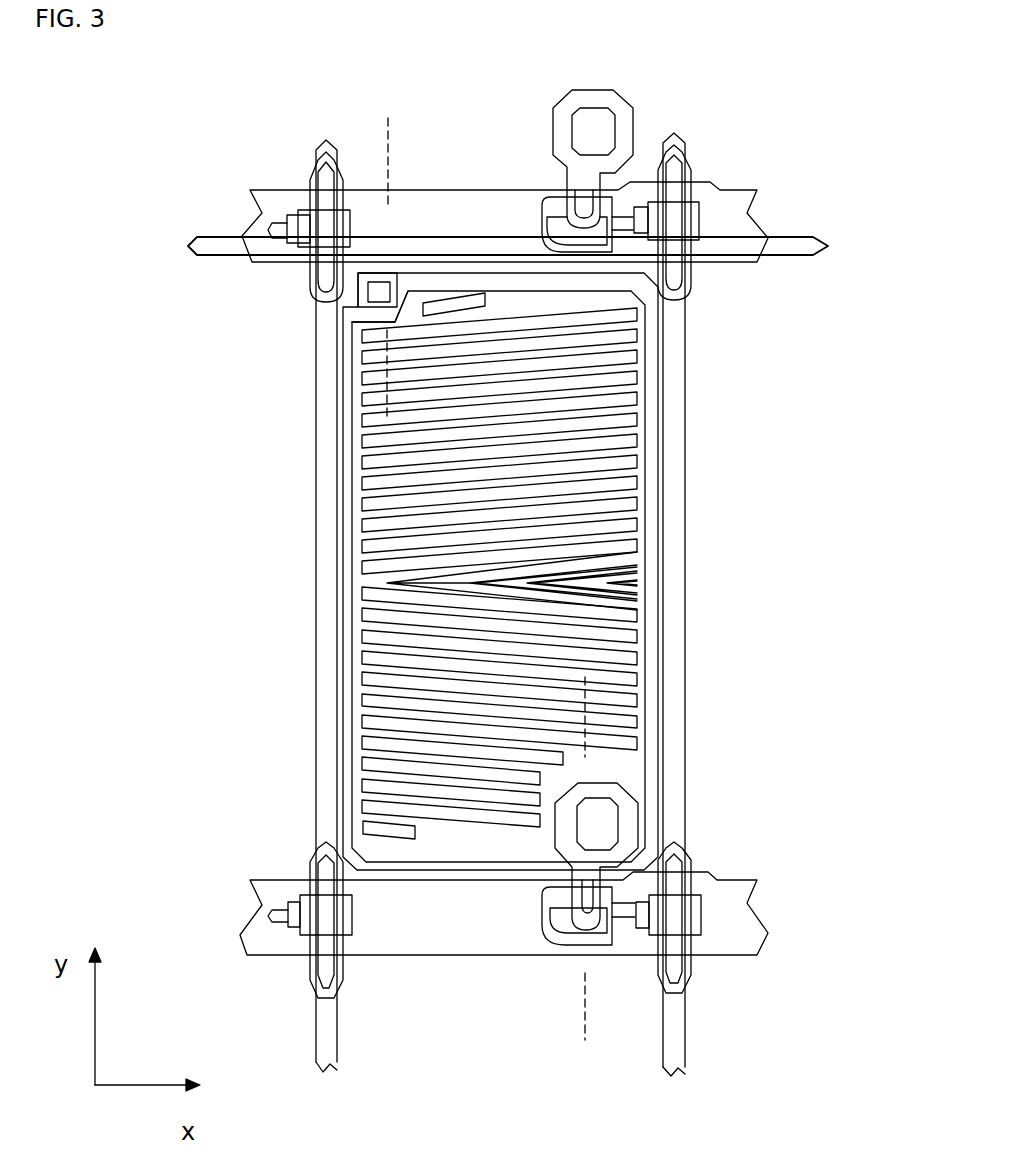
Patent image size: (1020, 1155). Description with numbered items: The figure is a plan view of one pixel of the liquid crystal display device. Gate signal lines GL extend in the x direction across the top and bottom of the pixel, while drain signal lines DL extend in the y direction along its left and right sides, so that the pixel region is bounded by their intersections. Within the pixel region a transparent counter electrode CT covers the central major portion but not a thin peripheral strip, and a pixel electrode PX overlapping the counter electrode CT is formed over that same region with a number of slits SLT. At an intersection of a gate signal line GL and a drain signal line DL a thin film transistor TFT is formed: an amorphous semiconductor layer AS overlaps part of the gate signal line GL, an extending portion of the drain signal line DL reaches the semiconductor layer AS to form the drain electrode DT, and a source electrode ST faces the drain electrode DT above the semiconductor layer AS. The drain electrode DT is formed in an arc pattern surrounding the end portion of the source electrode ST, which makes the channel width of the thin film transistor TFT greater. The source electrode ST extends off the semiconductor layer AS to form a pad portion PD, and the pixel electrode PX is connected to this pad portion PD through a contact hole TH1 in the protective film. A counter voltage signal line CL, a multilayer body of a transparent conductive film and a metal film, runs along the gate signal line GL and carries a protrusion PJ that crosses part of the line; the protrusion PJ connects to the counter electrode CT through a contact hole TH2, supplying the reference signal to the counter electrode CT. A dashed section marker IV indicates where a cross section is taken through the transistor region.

The gate signal line GL is at (760, 222).
The counter voltage signal line CL is at (217, 262).
The drain signal line DL is at (328, 530).
The counter electrode CT is at (343, 607).
The pixel electrode PX is at (610, 460).
The slit SLT is at (617, 405).
The contact hole TH2 is at (393, 291).
The protrusion PJ is at (357, 278).
The pad portion PD is at (628, 797).
The contact hole TH1 is at (617, 822).
The source electrode ST is at (607, 903).
The drain electrode DT is at (553, 945).
The amorphous semiconductor layer AS is at (613, 945).
The thin film transistor TFT is at (630, 970).
The section line IV is at (568, 688).